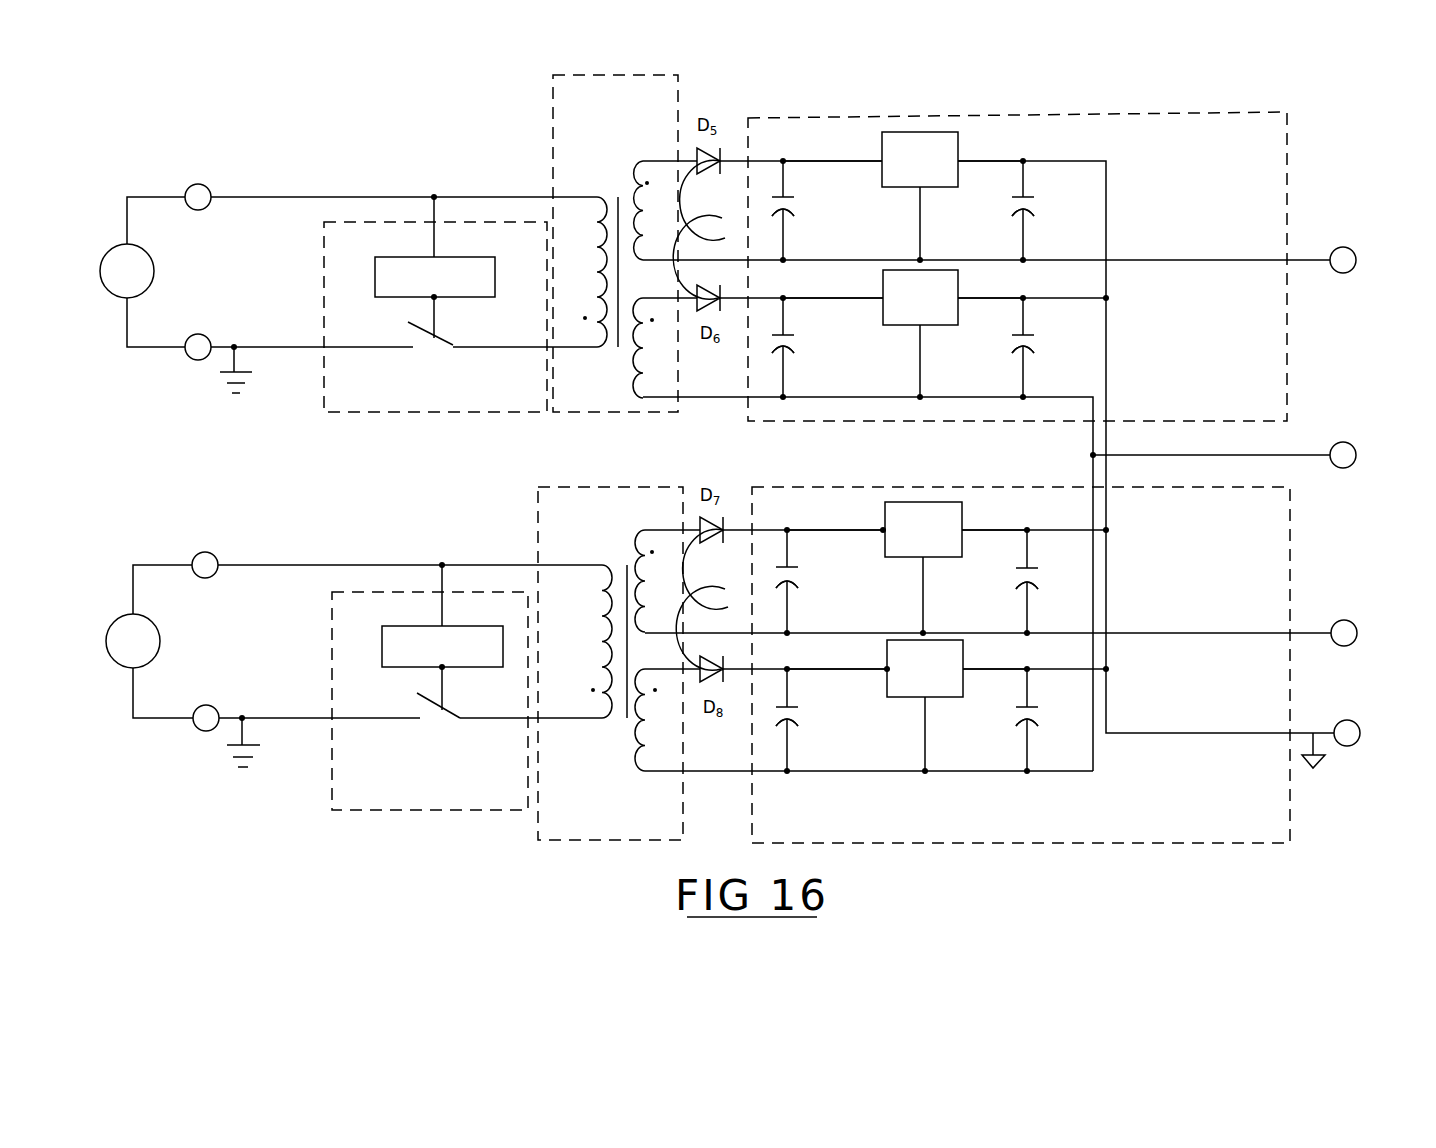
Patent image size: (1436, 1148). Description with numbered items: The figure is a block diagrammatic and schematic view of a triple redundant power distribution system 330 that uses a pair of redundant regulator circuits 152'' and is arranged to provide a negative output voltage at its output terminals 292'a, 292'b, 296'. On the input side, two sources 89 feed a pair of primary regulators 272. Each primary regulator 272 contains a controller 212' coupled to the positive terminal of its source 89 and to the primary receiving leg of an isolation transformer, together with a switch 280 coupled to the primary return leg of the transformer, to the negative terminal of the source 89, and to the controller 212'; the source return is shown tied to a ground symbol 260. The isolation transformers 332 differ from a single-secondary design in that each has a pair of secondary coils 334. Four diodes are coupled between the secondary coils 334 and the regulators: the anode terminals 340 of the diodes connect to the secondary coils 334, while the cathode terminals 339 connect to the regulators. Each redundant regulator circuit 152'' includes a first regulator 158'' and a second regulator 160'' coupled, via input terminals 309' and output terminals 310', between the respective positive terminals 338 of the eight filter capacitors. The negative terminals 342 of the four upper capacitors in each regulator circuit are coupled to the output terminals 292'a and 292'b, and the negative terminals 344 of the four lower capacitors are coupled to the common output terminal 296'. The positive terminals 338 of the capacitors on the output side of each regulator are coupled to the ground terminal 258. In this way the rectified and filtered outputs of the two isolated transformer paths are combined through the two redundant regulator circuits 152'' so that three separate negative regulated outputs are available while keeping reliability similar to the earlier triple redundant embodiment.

The sources 89 is at (120, 298).
The ground 260 is at (232, 353).
The primary regulators 272 is at (348, 222).
The controllers 212' is at (445, 453).
The switches 280 is at (453, 343).
The isolation transformers 332 is at (598, 412).
The secondary coils 334 is at (635, 304).
The cathode terminals 339 is at (711, 384).
The anode terminals 340 is at (702, 442).
The positive terminals 338 is at (785, 196).
The negative terminals 342 is at (790, 212).
The negative terminals 344 is at (783, 352).
The input terminals 309' is at (835, 373).
The output terminals 310' is at (993, 398).
The first regulator 158'' is at (922, 317).
The second regulator 160'' is at (938, 459).
The redundant regulator circuits 152'' is at (1063, 460).
The triple redundant power distribution system 330 is at (1306, 125).
The output terminal 292'a is at (1377, 241).
The output terminal 292'b is at (1373, 654).
The common output terminal 296' is at (1348, 479).
The ground terminal 258 is at (1313, 738).